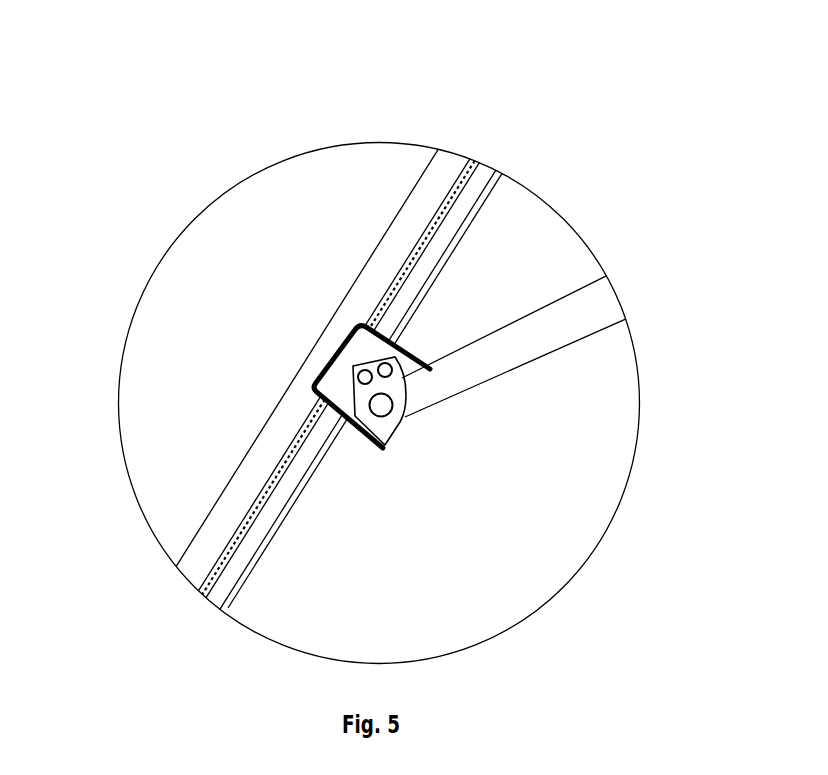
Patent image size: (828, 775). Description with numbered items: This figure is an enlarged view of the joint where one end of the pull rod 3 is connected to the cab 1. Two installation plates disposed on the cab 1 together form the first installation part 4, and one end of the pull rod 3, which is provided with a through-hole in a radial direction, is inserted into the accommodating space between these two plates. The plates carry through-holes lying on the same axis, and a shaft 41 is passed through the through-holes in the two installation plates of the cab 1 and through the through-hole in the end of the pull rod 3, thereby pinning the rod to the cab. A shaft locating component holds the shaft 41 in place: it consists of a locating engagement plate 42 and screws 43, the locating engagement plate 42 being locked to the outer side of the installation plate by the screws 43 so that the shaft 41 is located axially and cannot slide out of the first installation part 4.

The cab 1 is at (445, 207).
The pull rod 3 is at (535, 338).
The first installation part 4 is at (335, 402).
The shaft 41 is at (350, 421).
The locating engagement plate 42 is at (352, 389).
The screws 43 is at (399, 347).